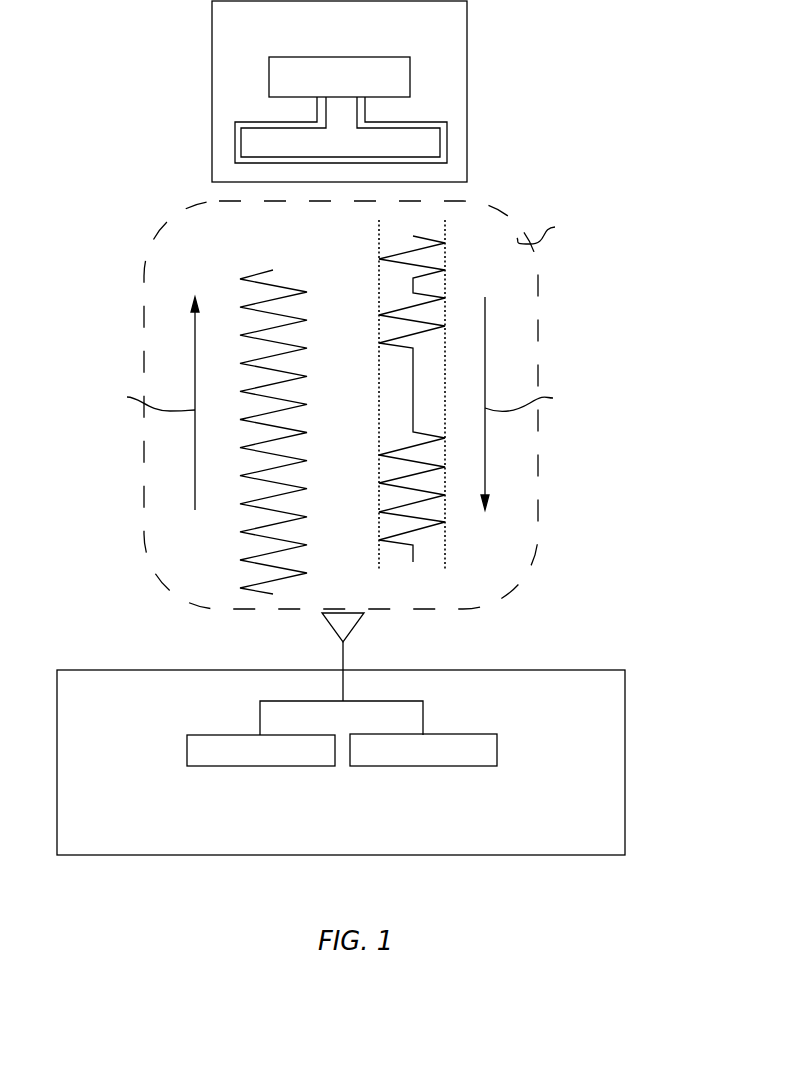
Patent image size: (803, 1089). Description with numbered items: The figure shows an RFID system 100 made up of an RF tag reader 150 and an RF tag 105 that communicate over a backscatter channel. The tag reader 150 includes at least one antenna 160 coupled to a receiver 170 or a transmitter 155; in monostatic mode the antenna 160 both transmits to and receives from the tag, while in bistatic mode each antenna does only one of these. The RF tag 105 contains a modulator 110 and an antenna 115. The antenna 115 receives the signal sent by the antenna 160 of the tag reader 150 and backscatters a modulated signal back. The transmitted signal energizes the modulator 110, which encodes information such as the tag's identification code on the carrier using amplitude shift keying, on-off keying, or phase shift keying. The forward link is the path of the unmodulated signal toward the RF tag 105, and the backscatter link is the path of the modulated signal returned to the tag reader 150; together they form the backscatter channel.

The RFID system 100 is at (140, 68).
The RF tag 105 is at (410, 37).
The modulator 110 is at (410, 78).
The antenna 115 is at (447, 143).
The RF tag reader 150 is at (440, 827).
The transmitter 155 is at (423, 766).
The antenna 160 is at (355, 627).
The receiver 170 is at (260, 766).